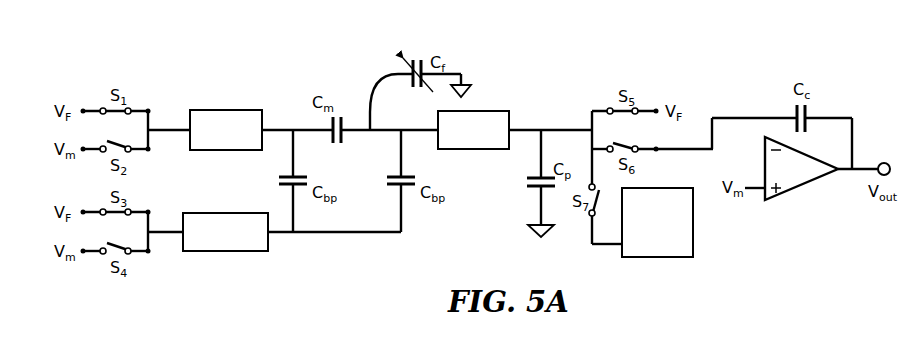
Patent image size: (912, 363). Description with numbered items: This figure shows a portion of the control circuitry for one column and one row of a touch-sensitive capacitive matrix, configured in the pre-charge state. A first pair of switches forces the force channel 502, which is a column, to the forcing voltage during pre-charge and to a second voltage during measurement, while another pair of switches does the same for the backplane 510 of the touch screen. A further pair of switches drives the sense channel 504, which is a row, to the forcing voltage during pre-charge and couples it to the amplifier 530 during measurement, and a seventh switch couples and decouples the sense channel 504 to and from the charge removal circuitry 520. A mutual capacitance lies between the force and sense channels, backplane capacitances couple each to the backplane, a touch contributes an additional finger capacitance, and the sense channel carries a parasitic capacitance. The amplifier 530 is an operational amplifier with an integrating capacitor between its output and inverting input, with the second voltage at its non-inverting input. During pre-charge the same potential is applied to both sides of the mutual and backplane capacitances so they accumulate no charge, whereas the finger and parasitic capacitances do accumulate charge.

The force channel 502 is at (226, 130).
The sense channel 504 is at (473, 130).
The backplane 510 is at (225, 232).
The charge removal circuitry 520 is at (657, 222).
The amplifier 530 is at (801, 168).